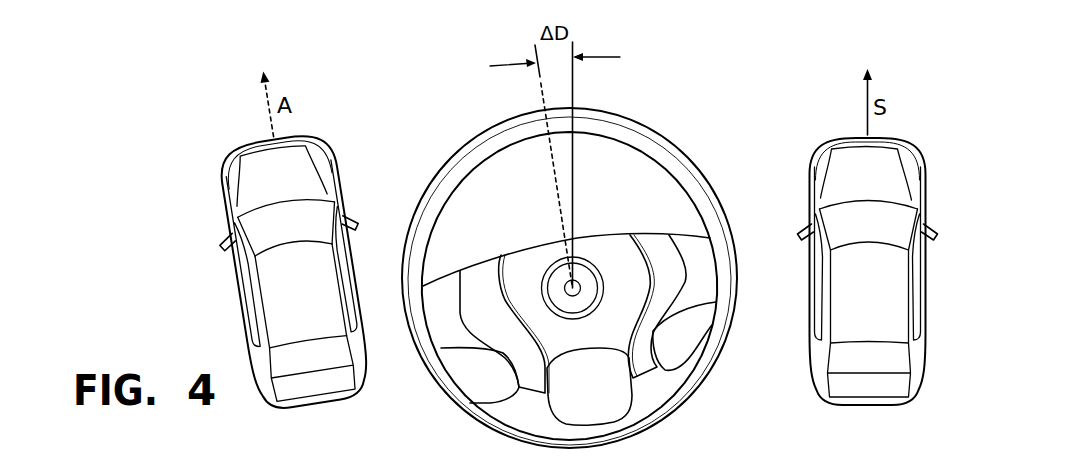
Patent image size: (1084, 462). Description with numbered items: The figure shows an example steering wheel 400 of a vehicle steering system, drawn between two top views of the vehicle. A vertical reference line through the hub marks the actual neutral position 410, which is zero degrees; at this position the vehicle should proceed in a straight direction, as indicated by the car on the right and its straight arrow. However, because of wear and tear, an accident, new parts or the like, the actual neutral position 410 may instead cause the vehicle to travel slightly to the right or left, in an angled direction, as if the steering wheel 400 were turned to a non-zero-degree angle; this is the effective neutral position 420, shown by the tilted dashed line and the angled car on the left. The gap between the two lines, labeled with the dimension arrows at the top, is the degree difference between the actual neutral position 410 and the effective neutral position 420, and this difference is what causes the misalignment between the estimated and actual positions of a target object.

The steering wheel 400 is at (683, 153).
The actual neutral position 410 is at (573, 98).
The effective neutral position 420 is at (540, 102).